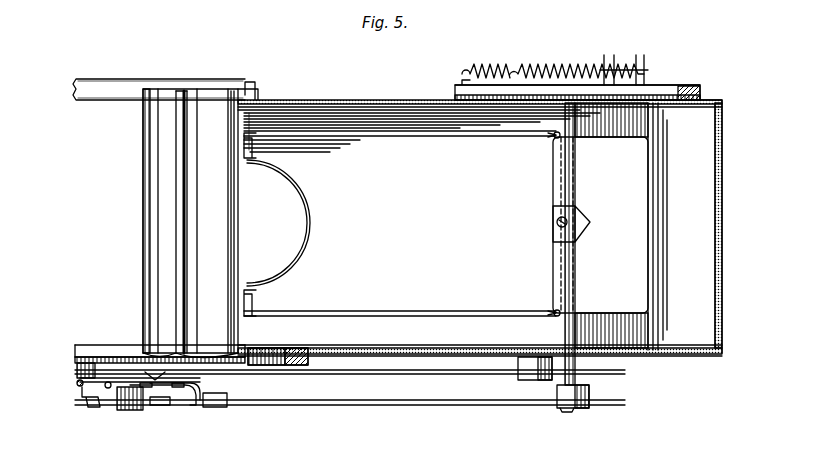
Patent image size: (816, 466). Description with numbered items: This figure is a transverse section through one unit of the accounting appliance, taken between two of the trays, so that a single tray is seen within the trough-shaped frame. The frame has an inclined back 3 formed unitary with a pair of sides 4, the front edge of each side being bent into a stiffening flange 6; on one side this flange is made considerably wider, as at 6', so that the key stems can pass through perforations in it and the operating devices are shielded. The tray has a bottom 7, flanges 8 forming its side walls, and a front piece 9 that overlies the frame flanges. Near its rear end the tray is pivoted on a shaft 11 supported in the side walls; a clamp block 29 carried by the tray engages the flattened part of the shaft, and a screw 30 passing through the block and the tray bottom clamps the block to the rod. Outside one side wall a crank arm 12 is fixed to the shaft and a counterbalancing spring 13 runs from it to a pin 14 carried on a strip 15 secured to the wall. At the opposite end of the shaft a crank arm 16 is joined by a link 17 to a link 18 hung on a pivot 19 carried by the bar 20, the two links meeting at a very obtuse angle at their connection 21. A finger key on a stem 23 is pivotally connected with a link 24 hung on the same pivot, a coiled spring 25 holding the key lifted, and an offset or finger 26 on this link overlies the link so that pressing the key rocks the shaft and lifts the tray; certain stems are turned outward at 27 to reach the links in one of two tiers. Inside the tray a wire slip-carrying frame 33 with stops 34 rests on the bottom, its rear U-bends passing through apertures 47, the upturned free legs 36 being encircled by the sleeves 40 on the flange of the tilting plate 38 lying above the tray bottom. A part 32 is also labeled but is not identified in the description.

The inclined back 3 is at (720, 204).
The side 4 is at (312, 96).
The flange 6 is at (253, 80).
The wide flange 6' is at (160, 339).
The bottom 7 is at (372, 128).
The flange 8 is at (348, 131).
The front piece 9 is at (148, 270).
The shaft or pivot rod 11 is at (560, 100).
The crank arm 12 is at (458, 85).
The spring 13 is at (500, 66).
The pin 14 is at (618, 62).
The strip 15 is at (680, 88).
The crank arm 16 is at (556, 390).
The link 17 is at (370, 404).
The link 18 is at (115, 356).
The pivot 19 is at (86, 404).
The bar 20 is at (300, 365).
The point of connection 21 is at (200, 384).
The stem 23 is at (78, 386).
The link 24 is at (78, 366).
The coiled spring 25 is at (80, 380).
The offset or finger 26 is at (162, 380).
The outward-turned stem end 27 is at (175, 380).
The clamp block 29 is at (555, 242).
The screw 30 is at (556, 222).
The lens board 32 is at (590, 130).
The slip-carrying frame 33 is at (305, 236).
The stop or projection 34 is at (262, 150).
The free leg 36 is at (556, 140).
The plate 38 is at (658, 195).
The ends or sleeves 40 is at (548, 138).
The aperture 47 is at (548, 132).